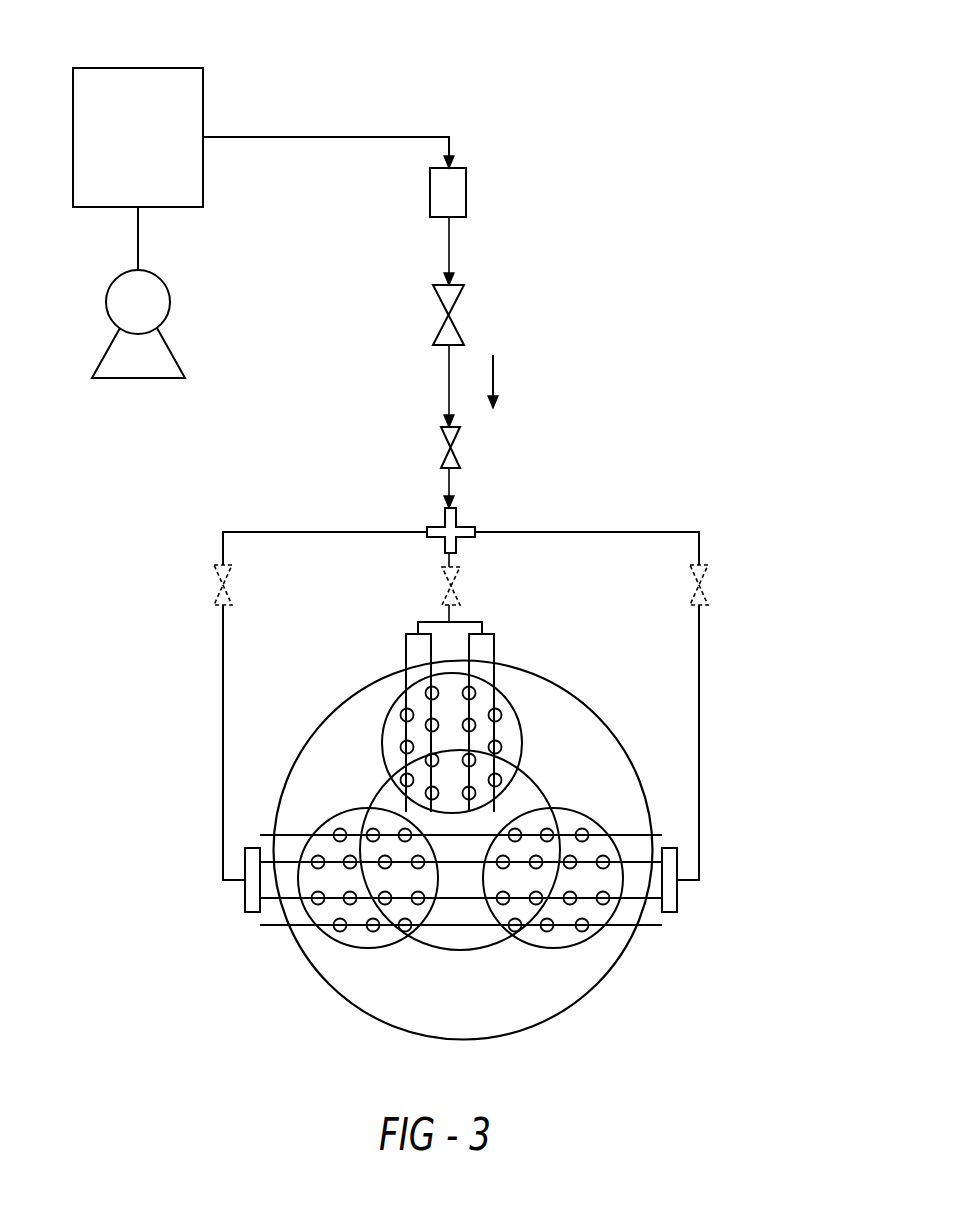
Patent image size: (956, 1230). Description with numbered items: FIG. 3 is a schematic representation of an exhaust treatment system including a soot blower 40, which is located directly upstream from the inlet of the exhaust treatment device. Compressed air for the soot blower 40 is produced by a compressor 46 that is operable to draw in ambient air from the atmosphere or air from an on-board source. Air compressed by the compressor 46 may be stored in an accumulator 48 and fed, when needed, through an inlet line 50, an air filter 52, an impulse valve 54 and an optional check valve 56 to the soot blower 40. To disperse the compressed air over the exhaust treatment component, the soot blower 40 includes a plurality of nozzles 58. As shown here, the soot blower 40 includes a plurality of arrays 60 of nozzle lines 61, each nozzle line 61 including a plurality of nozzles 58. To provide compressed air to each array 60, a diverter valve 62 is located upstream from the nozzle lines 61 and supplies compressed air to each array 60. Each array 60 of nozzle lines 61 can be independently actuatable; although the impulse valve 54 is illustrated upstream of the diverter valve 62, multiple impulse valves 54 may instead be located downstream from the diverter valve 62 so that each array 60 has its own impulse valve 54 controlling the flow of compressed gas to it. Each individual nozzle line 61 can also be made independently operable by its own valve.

The soot blower 40 is at (617, 732).
The compressor 46 is at (170, 355).
The accumulator 48 is at (177, 68).
The inlet line 50 is at (375, 135).
The air filter 52 is at (468, 180).
The impulse valve 54 is at (457, 296).
The check valve 56 is at (443, 458).
The nozzles 58 is at (502, 713).
The arrays 60 is at (498, 652).
The nozzle lines 61 is at (407, 652).
The diverter valve 62 is at (445, 520).